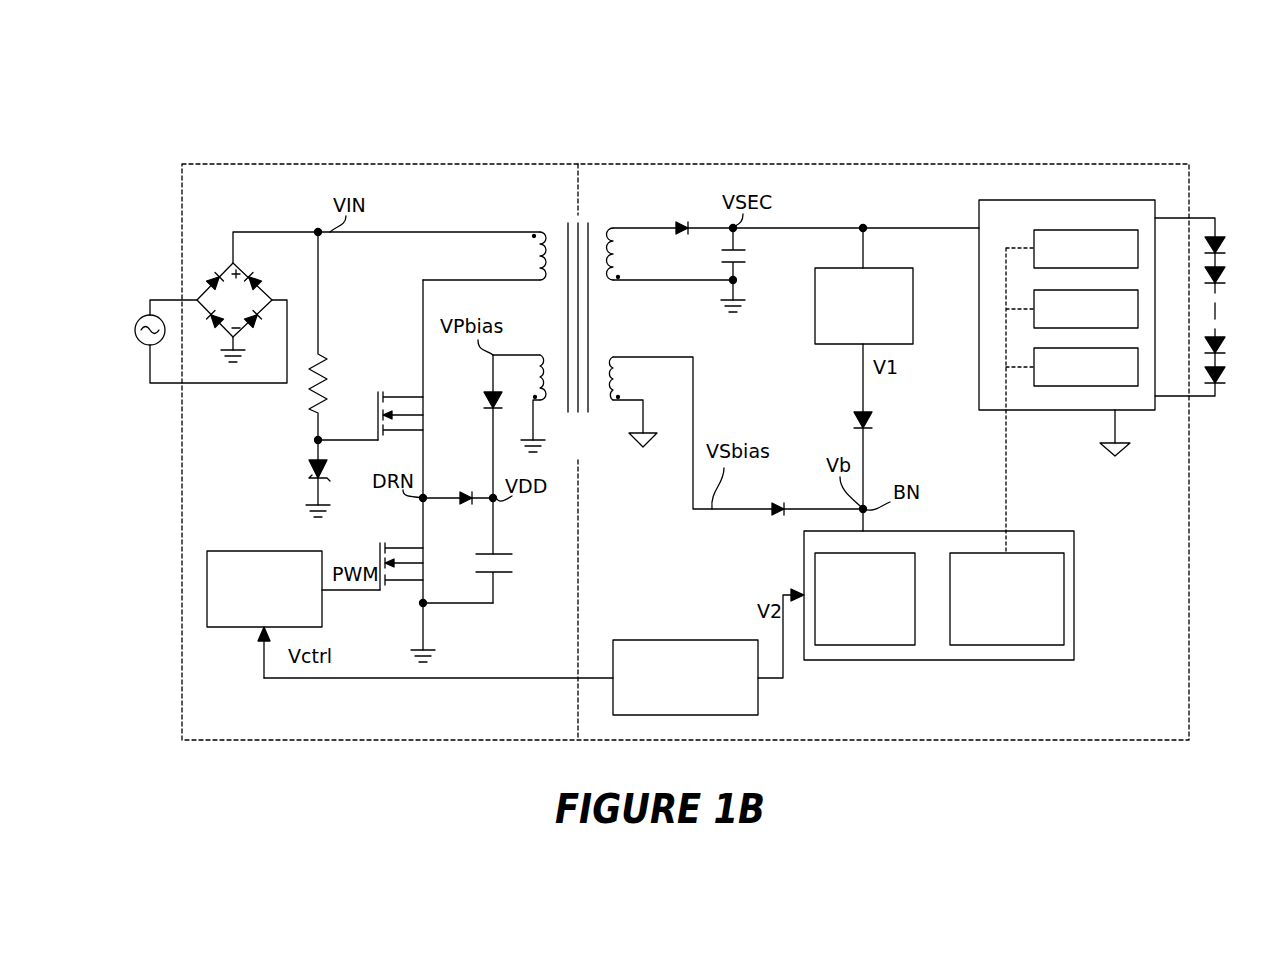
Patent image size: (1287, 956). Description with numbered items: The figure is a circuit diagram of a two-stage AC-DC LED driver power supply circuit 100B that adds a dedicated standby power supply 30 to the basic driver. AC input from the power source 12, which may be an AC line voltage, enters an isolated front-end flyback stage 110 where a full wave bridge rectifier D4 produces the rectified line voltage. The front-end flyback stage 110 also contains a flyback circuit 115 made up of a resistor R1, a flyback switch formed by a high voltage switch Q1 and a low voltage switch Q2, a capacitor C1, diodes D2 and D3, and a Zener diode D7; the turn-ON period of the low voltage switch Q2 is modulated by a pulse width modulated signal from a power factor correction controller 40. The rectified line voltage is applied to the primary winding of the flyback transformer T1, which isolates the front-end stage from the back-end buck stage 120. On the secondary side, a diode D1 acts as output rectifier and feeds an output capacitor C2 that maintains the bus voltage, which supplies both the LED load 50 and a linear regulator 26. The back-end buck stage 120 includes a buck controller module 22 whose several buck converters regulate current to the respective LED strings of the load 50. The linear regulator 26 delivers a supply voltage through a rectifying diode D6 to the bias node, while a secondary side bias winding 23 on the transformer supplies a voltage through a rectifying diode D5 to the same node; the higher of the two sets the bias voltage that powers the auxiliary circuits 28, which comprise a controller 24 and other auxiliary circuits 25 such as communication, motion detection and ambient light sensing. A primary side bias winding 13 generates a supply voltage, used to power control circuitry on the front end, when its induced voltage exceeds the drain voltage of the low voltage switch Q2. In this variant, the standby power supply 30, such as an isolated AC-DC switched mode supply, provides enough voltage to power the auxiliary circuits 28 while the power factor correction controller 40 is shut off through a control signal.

The power supply circuit 100B is at (775, 113).
The front-end flyback stage 110 is at (370, 163).
The back-end buck stage 120 is at (715, 163).
The power source 12 is at (150, 316).
The primary side bias winding 13 is at (540, 355).
The secondary side bias winding 23 is at (614, 357).
The buck controller module 22 is at (1067, 376).
The controller 24 is at (1007, 599).
The other auxiliary circuits 25 is at (865, 599).
The linear regulator 26 is at (864, 286).
The auxiliary circuits 28 is at (1076, 563).
The standby power supply 30 is at (685, 677).
The power factor correction controller 40 is at (264, 589).
The load 50 is at (1218, 232).
The flyback circuit 115 is at (300, 451).
The diode D1 is at (796, 213).
The diode D2 is at (458, 485).
The diode D3 is at (475, 454).
The full wave bridge rectifier D4 is at (257, 297).
The rectifying diode D5 is at (779, 494).
The rectifying diode D6 is at (884, 420).
The Zener diode D7 is at (299, 478).
The high voltage switch Q1 is at (400, 397).
The low voltage switch Q2 is at (384, 547).
The resistor R1 is at (333, 336).
The capacitor C1 is at (509, 578).
The output capacitor C2 is at (695, 270).
The flyback transformer T1 is at (521, 317).